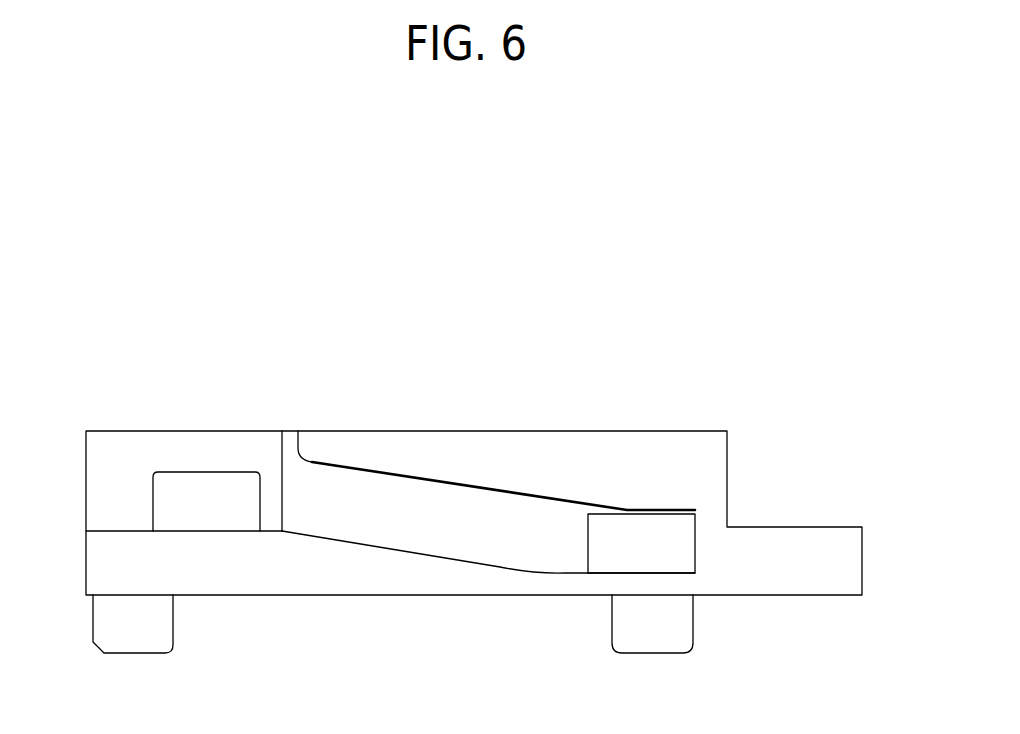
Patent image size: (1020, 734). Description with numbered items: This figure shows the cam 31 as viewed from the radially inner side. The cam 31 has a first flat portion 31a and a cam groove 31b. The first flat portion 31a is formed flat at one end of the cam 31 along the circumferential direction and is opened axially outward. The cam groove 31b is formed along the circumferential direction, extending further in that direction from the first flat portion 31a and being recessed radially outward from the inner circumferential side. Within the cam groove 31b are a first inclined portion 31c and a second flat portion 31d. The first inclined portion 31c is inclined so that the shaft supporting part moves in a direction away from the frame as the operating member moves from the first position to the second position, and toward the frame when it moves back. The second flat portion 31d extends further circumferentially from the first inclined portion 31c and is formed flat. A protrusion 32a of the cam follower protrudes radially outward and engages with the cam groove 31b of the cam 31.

The cam 31 is at (723, 403).
The first flat portion 31a is at (213, 531).
The cam groove 31b is at (408, 513).
The first inclined portion 31c is at (448, 556).
The second flat portion 31d is at (640, 573).
The protrusion 32a is at (633, 533).